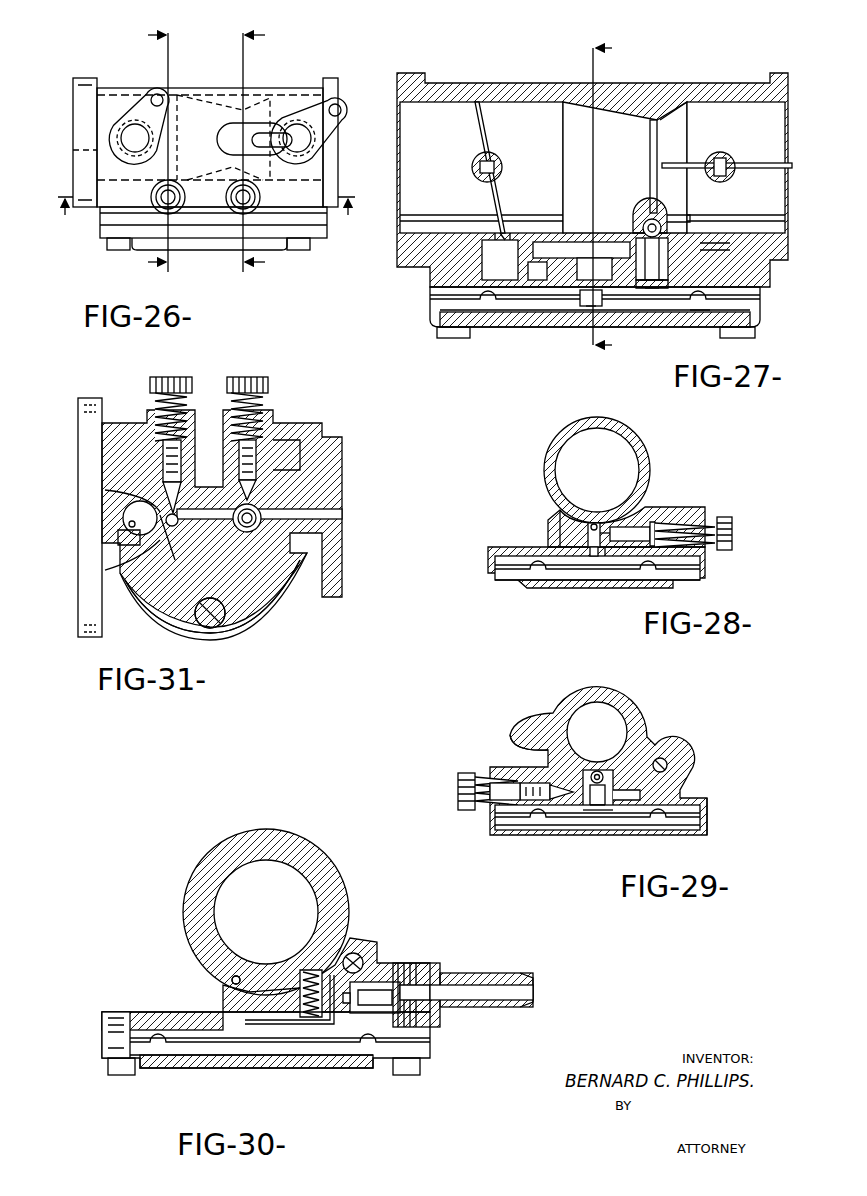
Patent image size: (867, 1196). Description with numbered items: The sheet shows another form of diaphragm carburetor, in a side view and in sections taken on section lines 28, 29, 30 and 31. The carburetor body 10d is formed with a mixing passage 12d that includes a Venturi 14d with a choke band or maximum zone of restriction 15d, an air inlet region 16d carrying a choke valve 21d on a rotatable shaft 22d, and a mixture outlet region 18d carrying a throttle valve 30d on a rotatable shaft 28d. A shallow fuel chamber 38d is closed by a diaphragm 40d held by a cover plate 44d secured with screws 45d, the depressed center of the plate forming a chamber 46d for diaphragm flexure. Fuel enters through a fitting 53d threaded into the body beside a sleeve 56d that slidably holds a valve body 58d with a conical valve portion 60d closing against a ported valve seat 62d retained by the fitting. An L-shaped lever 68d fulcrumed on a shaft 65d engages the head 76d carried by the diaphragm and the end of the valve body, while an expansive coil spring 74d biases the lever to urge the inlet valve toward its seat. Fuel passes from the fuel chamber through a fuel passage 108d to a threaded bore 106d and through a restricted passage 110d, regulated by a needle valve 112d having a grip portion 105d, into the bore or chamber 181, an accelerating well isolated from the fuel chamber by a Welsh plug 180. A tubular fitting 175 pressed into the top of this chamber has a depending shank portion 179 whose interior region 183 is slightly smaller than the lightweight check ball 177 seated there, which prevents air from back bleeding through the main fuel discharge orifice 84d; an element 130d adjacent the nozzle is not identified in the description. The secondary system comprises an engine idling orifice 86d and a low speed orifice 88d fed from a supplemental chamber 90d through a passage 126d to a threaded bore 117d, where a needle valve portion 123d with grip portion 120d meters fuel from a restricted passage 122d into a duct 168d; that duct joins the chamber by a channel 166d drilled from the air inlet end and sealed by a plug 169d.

In FIG. 26, the carburetor body 10d is at (262, 86).
In FIG. 27, the carburetor body 10d is at (617, 82).
In FIG. 31, the carburetor body 10d is at (210, 519).
In FIG. 28, the carburetor body 10d is at (556, 440).
In FIG. 29, the carburetor body 10d is at (600, 680).
In FIG. 30, the carburetor body 10d is at (233, 834).
In FIG. 26, the mixing passage 12d is at (205, 100).
In FIG. 27, the mixing passage 12d is at (627, 140).
In FIG. 27, the Venturi 14d is at (678, 126).
In FIG. 27, the choke band or maximum zone of restriction 15d is at (658, 150).
In FIG. 26, the air inlet region 16d is at (318, 88).
In FIG. 27, the air inlet region 16d is at (775, 125).
In FIG. 26, the mixture outlet region 18d is at (75, 103).
In FIG. 27, the mixture outlet region 18d is at (452, 128).
In FIG. 27, the choke valve 21d is at (735, 170).
In FIG. 26, the rotatable shaft 22d is at (322, 137).
In FIG. 27, the rotatable shaft 22d is at (729, 159).
In FIG. 26, the rotatable shaft 28d is at (118, 130).
In FIG. 27, the rotatable shaft 28d is at (497, 158).
In FIG. 27, the throttle valve 30d is at (484, 118).
In FIG. 27, the fuel chamber 38d is at (515, 312).
In FIG. 28, the fuel chamber 38d is at (530, 556).
In FIG. 29, the fuel chamber 38d is at (708, 808).
In FIG. 30, the fuel chamber 38d is at (190, 1025).
In FIG. 27, the diaphragm 40d is at (478, 332).
In FIG. 28, the diaphragm 40d is at (552, 588).
In FIG. 29, the diaphragm 40d is at (665, 835).
In FIG. 30, the diaphragm 40d is at (180, 1068).
In FIG. 27, the cover plate 44d is at (708, 322).
In FIG. 28, the cover plate 44d is at (532, 588).
In FIG. 30, the cover plate 44d is at (197, 1070).
In FIG. 27, the screws 45d is at (447, 336).
In FIG. 30, the screws 45d is at (120, 1075).
In FIG. 27, the chamber 46d is at (700, 312).
In FIG. 30, the nipple or fitting 53d is at (485, 975).
In FIG. 30, the tubular member or sleeve 56d is at (400, 963).
In FIG. 30, the valve body 58d is at (370, 1008).
In FIG. 30, the conically shaped valve portion 60d is at (481, 996).
In FIG. 30, the ported valve seat 62d is at (412, 985).
In FIG. 29, the shaft 65d is at (668, 763).
In FIG. 30, the shaft 65d is at (356, 952).
In FIG. 27, the L-shaped lever 68d is at (595, 269).
In FIG. 30, the L-shaped lever 68d is at (332, 1026).
In FIG. 30, the expansive coil spring 74d is at (310, 968).
In FIG. 27, the head 76d is at (582, 300).
In FIG. 30, the head 76d is at (310, 1015).
In FIG. 27, the main fuel discharge orifice 84d is at (648, 220).
In FIG. 31, the main fuel discharge orifice 84d is at (230, 540).
In FIG. 29, the main fuel discharge orifice 84d is at (600, 768).
In FIG. 27, the engine idling orifice 86d is at (494, 240).
In FIG. 31, the engine idling orifice 86d is at (128, 524).
In FIG. 27, the low speed orifice 88d is at (500, 228).
In FIG. 31, the low speed orifice 88d is at (123, 515).
In FIG. 27, the supplemental chamber 90d is at (512, 266).
In FIG. 31, the supplemental chamber 90d is at (118, 538).
In FIG. 31, the manipulating grip portion 105d is at (248, 380).
In FIG. 29, the manipulating grip portion 105d is at (456, 775).
In FIG. 31, the threaded bore 106d is at (278, 455).
In FIG. 29, the threaded bore 106d is at (540, 780).
In FIG. 29, the fuel passage 108d is at (530, 838).
In FIG. 31, the restricted passage 110d is at (262, 510).
In FIG. 29, the restricted passage 110d is at (578, 808).
In FIG. 31, the needle valve 112d is at (275, 475).
In FIG. 29, the needle valve 112d is at (575, 755).
In FIG. 31, the threaded bore 117d is at (150, 475).
In FIG. 28, the threaded bore 117d is at (632, 530).
In FIG. 31, the manipulating grip portion 120d is at (193, 364).
In FIG. 28, the manipulating grip portion 120d is at (733, 528).
In FIG. 31, the restricted passage 122d is at (190, 540).
In FIG. 28, the restricted passage 122d is at (605, 530).
In FIG. 31, the needle valve portion 123d is at (178, 515).
In FIG. 28, the needle valve portion 123d is at (606, 556).
In FIG. 31, the passage 126d is at (140, 500).
In FIG. 27, the nozzle shoulder 130d is at (688, 224).
In FIG. 27, the channel or duct 166d is at (572, 245).
In FIG. 31, the channel or duct 166d is at (220, 560).
In FIG. 28, the channel or duct 166d is at (580, 527).
In FIG. 30, the channel or duct 166d is at (233, 975).
In FIG. 27, the bore or duct 168d is at (540, 282).
In FIG. 31, the bore or duct 168d is at (130, 555).
In FIG. 28, the bore or duct 168d is at (588, 537).
In FIG. 27, the plug 169d is at (722, 243).
In FIG. 27, the tubular fitting 175 is at (642, 222).
In FIG. 29, the tubular fitting 175 is at (620, 775).
In FIG. 27, the check ball 177 is at (657, 216).
In FIG. 29, the check ball 177 is at (612, 768).
In FIG. 27, the sleeve or hollow shank portion 179 is at (666, 262).
In FIG. 29, the sleeve or hollow shank portion 179 is at (642, 790).
In FIG. 27, the Welsh plug 180 is at (640, 312).
In FIG. 27, the bore or chamber 181 is at (668, 276).
In FIG. 29, the bore or chamber 181 is at (600, 812).
In FIG. 27, the interior region 183 is at (655, 292).
In FIG. 29, the interior region 183 is at (596, 808).
In FIG. 26, the section line 28 is at (150, 150).
In FIG. 26, the section line 29 is at (260, 150).
In FIG. 27, the section line 30 is at (609, 199).
In FIG. 26, the section line 31 is at (208, 213).